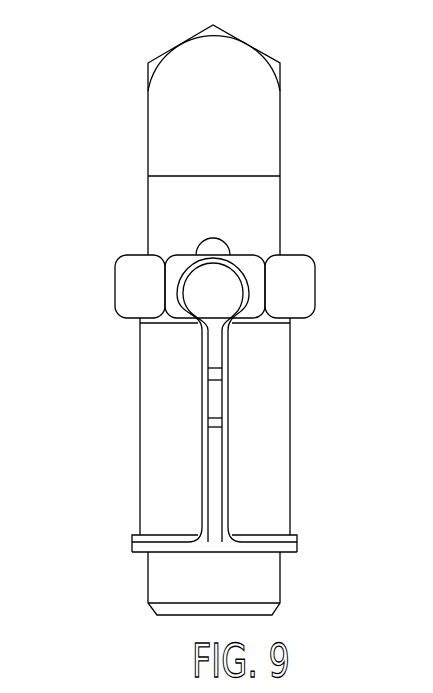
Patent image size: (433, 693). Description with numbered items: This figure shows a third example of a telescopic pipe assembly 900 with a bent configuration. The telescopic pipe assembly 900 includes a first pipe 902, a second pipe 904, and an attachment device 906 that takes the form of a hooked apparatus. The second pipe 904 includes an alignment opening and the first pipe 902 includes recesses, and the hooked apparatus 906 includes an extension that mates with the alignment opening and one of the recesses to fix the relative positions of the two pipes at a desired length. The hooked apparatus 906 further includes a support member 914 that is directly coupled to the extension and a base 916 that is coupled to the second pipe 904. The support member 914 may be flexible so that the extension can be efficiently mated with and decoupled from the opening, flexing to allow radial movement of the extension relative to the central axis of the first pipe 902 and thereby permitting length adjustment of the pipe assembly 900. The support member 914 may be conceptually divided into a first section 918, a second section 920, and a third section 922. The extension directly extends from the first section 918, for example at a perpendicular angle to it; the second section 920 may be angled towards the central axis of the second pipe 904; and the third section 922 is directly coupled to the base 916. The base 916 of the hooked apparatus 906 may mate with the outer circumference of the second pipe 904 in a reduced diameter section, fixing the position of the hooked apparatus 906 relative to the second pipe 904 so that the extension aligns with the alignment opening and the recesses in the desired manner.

The telescopic pipe assembly 900 is at (222, 307).
The first pipe 902 is at (243, 98).
The second pipe 904 is at (338, 437).
The attachment device 906 is at (258, 295).
The support member 914 is at (221, 400).
The base 916 is at (314, 543).
The first section 918 is at (218, 350).
The second section 920 is at (218, 397).
The third section 922 is at (218, 473).